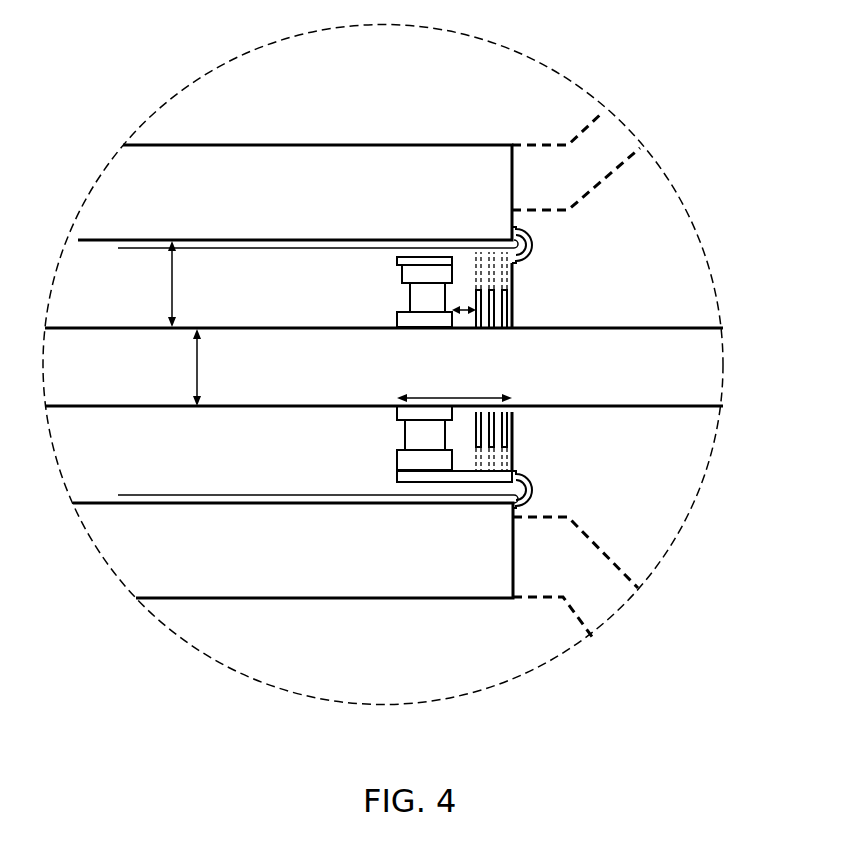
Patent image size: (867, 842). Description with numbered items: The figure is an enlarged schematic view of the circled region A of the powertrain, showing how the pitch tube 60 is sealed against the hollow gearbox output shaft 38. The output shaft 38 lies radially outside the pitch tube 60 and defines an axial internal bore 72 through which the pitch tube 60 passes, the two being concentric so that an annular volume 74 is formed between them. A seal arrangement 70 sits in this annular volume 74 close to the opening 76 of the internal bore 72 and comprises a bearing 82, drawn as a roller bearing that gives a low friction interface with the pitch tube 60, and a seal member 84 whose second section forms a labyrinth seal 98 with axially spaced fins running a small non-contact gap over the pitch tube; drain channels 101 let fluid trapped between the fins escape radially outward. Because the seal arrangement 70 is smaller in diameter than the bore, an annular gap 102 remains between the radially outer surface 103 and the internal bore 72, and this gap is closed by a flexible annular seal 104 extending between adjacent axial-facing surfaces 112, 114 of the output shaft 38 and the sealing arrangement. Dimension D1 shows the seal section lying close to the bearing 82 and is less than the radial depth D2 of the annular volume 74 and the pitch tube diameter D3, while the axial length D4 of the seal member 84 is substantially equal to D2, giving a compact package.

The circled region A is at (511, 50).
The gearbox output shaft 38 is at (236, 153).
The internal bore 72 is at (115, 240).
The annular volume 74 is at (243, 302).
The pitch tube 60 is at (304, 377).
The seal arrangement 70 is at (550, 442).
The bearing 82 is at (390, 300).
The seal member 84 is at (480, 483).
The labyrinth seal 98 is at (508, 322).
The drain channels 101 is at (477, 290).
The annular gap 102 is at (475, 247).
The radially outer surface 103 is at (420, 484).
The flexible annular seal 104 is at (524, 250).
The axial-facing surface 114 is at (517, 448).
The axial-facing surface 112 is at (513, 553).
The opening 76 is at (503, 473).
The dimension D1 is at (462, 318).
The dimension D2 is at (168, 288).
The dimension D3 is at (195, 368).
The dimension D4 is at (466, 397).